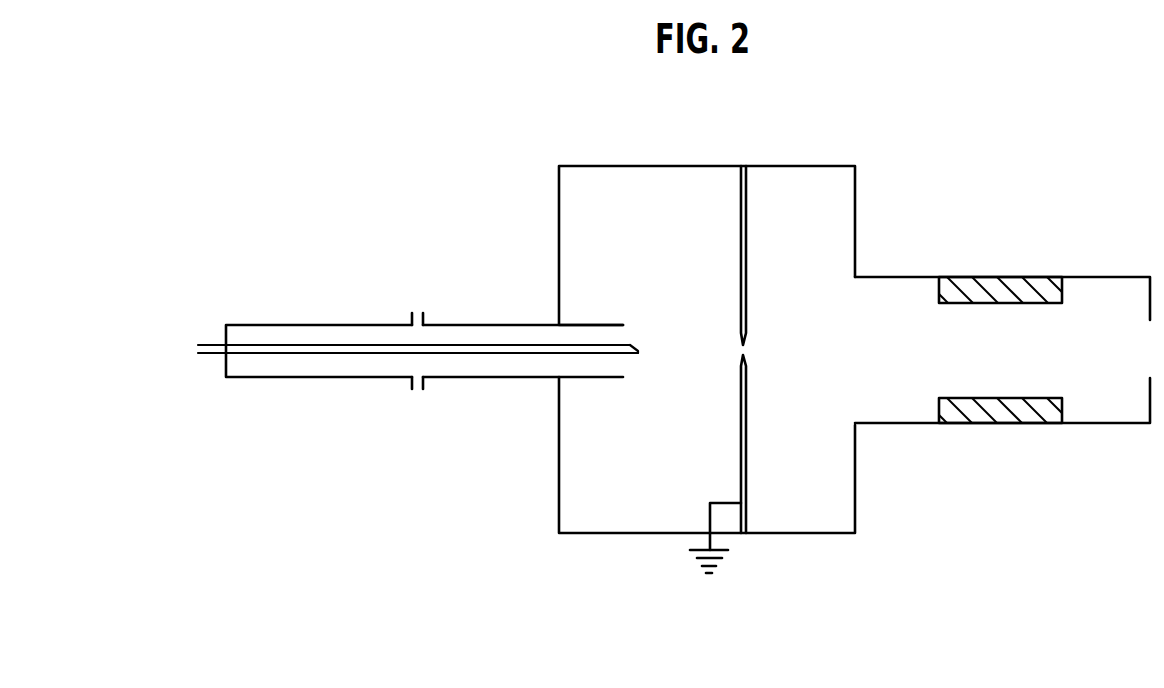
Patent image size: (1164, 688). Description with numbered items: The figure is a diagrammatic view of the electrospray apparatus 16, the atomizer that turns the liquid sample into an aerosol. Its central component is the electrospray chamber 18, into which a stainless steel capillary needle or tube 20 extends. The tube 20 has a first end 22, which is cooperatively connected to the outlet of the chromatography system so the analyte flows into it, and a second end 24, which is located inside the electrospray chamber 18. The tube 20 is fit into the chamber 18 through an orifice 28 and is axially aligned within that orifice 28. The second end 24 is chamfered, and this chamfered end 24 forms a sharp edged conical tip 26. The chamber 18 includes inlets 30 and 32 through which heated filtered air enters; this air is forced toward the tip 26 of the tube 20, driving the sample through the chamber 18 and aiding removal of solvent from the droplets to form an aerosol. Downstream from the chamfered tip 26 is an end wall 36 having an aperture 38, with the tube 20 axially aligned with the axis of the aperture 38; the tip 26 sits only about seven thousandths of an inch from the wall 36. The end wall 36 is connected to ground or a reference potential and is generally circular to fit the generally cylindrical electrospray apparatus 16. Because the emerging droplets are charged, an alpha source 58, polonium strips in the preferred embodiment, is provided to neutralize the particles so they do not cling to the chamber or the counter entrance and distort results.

The electrospray apparatus 16 is at (400, 154).
The electrospray chamber 18 is at (622, 238).
The tube 20 is at (322, 345).
The first end 22 is at (212, 342).
The second end 24 is at (622, 343).
The conical tip 26 is at (633, 352).
The orifice 28 is at (222, 356).
The inlet 30 is at (418, 310).
The inlet 32 is at (418, 390).
The end wall 36 is at (747, 246).
The aperture 38 is at (747, 352).
The alpha source 58 is at (1012, 423).